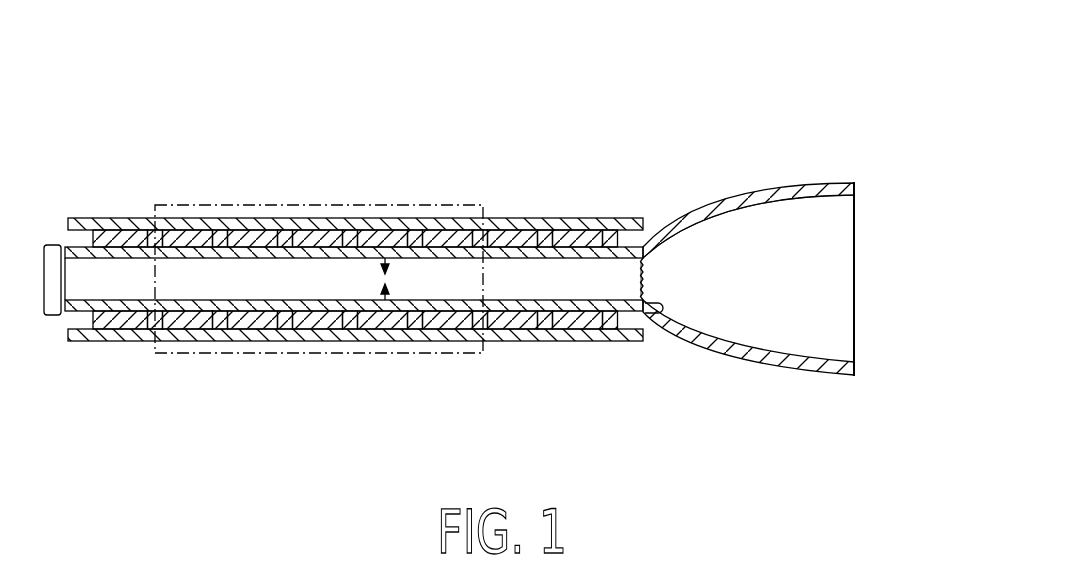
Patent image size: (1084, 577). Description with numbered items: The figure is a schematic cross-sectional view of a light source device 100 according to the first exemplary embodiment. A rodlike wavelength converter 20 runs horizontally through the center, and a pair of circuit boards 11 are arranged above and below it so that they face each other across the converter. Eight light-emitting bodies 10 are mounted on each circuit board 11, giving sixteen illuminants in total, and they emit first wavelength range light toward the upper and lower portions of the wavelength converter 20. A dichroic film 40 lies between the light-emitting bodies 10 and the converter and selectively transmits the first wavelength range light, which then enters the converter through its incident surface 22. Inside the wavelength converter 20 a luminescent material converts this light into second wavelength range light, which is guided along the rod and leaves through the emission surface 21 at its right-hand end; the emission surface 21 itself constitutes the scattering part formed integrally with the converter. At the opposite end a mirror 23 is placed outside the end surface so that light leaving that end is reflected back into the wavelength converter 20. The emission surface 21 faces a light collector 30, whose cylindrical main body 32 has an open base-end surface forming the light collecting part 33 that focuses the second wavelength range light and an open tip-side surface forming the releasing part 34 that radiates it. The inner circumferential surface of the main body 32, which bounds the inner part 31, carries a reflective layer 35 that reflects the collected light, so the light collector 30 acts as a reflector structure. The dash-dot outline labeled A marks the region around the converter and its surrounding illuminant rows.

The light source device 100 is at (757, 106).
The light-emitting body 10 is at (520, 237).
The circuit board 11 is at (386, 257).
The wavelength converter 20 is at (245, 273).
The emission surface 21 is at (648, 282).
The incident surface 22 is at (320, 233).
The mirror 23 is at (52, 245).
The light collector 30 is at (880, 222).
The inner part 31 is at (795, 218).
The main body 32 is at (807, 363).
The light collecting part 33 is at (663, 306).
The releasing part 34 is at (860, 343).
The reflective layer 35 is at (737, 212).
The dichroic film 40 is at (175, 229).
The region A is at (475, 204).